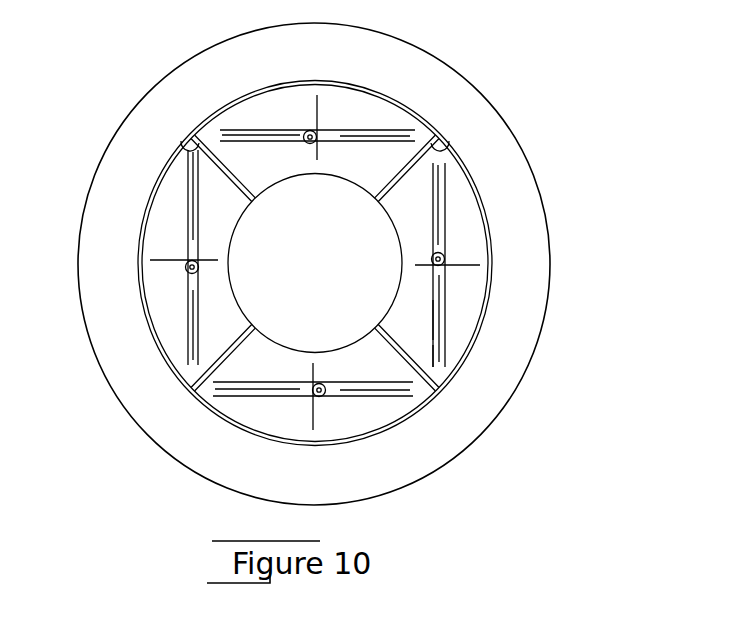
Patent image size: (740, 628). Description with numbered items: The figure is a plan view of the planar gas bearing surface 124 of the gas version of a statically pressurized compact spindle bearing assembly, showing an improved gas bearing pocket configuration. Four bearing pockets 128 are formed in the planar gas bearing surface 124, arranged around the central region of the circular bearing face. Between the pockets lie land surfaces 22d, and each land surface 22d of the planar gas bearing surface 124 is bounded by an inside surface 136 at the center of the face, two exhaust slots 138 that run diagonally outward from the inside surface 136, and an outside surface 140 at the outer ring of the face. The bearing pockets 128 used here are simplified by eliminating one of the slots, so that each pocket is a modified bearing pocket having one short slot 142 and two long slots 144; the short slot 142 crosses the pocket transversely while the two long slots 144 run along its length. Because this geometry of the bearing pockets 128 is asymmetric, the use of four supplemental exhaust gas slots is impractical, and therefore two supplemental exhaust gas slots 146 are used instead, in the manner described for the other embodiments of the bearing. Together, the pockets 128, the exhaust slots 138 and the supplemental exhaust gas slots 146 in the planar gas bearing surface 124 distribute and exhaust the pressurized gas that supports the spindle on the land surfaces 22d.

The land surface 22d is at (391, 172).
The planar gas bearing surface 124 is at (447, 101).
The bearing pockets 128 is at (292, 129).
The inside surface 136 is at (269, 176).
The exhaust slots 138 is at (182, 140).
The outside surface 140 is at (319, 81).
The short slot 142 is at (455, 267).
The long slots 144 is at (433, 321).
The supplemental exhaust gas slots 146 is at (434, 357).